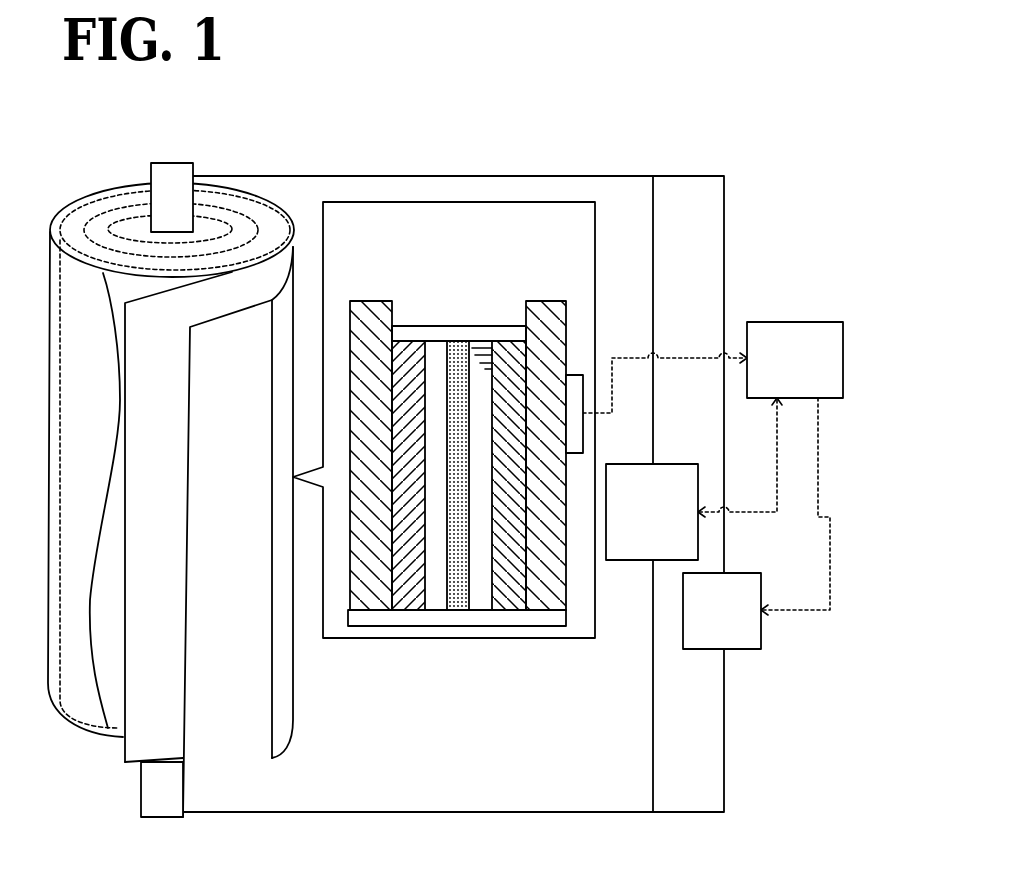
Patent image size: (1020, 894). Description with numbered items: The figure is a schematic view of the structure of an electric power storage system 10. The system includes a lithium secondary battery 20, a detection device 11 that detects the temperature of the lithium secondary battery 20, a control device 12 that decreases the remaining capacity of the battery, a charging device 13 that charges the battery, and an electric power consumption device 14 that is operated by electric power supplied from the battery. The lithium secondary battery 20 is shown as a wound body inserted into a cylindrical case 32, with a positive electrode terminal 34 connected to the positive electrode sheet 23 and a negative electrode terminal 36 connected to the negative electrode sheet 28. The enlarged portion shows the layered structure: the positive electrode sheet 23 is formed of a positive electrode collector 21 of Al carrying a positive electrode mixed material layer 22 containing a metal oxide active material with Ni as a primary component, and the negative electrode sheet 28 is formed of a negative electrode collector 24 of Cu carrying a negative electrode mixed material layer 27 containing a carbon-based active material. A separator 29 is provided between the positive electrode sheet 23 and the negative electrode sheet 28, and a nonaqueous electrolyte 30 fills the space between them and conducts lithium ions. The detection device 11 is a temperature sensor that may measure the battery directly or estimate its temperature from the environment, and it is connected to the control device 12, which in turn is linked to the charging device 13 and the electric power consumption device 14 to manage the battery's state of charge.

The electric power storage system 10 is at (737, 142).
The lithium secondary battery 20 is at (262, 157).
The cylindrical case 32 is at (83, 198).
The positive electrode terminal 34 is at (168, 163).
The negative electrode terminal 36 is at (160, 820).
The negative electrode sheet 28 is at (294, 503).
The negative electrode collector 24 is at (369, 327).
The negative electrode mixed material layer 27 is at (407, 352).
The nonaqueous electrolyte 30 is at (432, 367).
The separator 29 is at (457, 363).
The positive electrode sheet 23 is at (380, 496).
The positive electrode mixed material layer 22 is at (505, 352).
The positive electrode collector 21 is at (547, 338).
The detection device 11 is at (573, 373).
The control device 12 is at (763, 322).
The charging device 13 is at (738, 573).
The electric power consumption device 14 is at (677, 463).